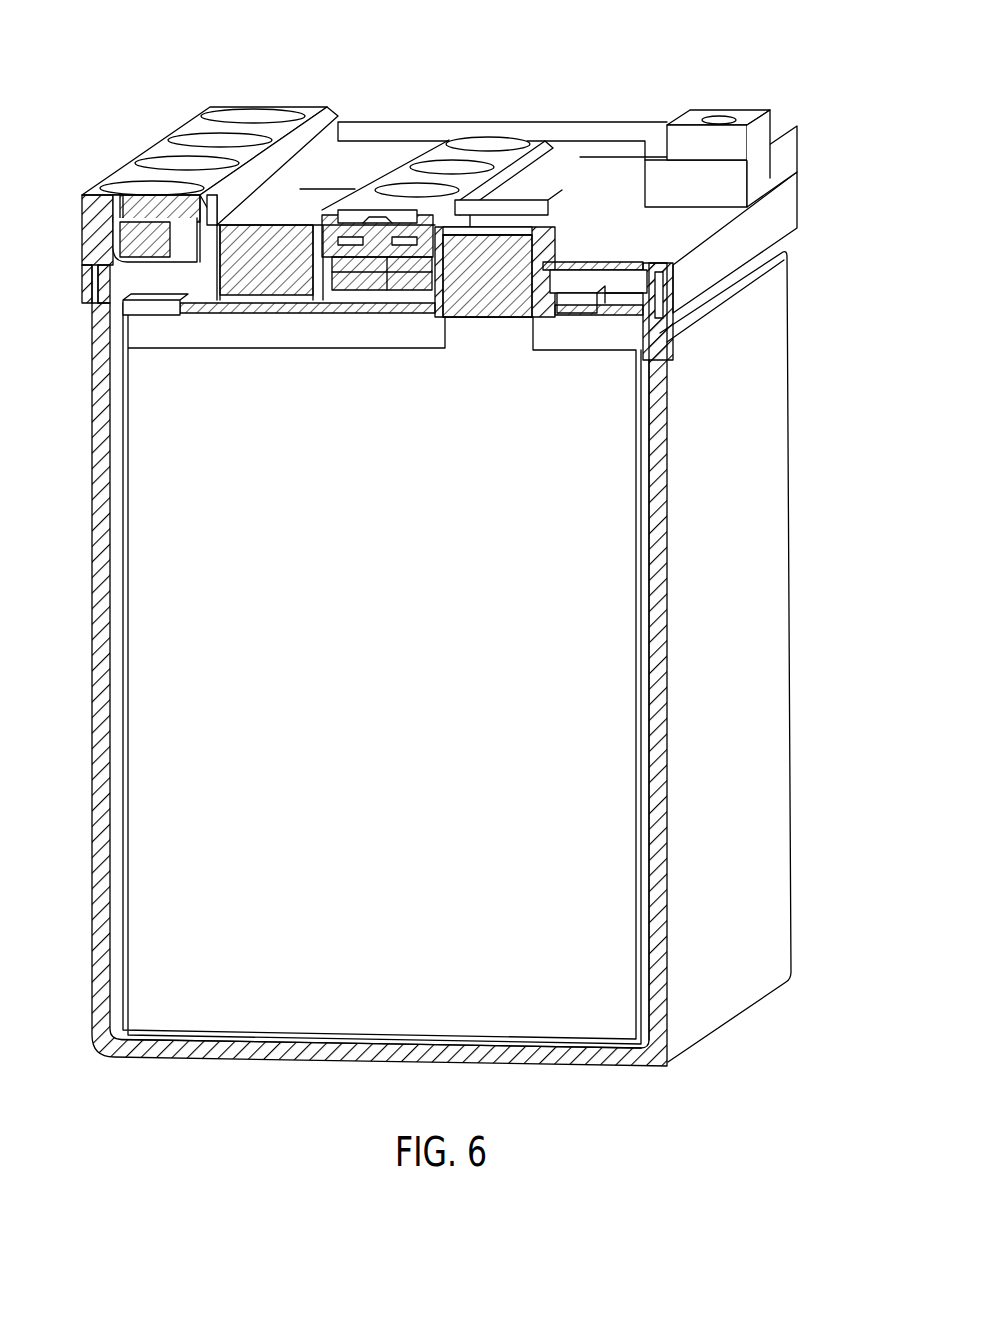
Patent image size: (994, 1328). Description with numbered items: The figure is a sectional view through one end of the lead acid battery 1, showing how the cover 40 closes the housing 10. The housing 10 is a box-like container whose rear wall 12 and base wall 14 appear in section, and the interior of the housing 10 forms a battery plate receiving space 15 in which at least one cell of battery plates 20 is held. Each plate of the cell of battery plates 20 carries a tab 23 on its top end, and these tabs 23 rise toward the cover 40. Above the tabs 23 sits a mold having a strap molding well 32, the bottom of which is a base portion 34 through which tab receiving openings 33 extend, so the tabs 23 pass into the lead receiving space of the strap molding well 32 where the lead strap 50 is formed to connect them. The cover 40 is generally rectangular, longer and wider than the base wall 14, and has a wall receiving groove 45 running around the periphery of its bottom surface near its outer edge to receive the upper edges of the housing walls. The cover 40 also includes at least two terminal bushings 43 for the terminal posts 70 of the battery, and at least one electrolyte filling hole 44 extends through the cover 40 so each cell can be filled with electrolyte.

The lead acid battery 1 is at (439, 578).
The housing 10 is at (446, 704).
The rear wall 12 is at (723, 697).
The base wall 14 is at (278, 1051).
The battery plate receiving space 15 is at (572, 1008).
The cell of battery plates 20 is at (630, 341).
The tab 23 is at (497, 323).
The strap molding well 32 is at (550, 293).
The tab receiving opening 33 is at (505, 318).
The base portion 34 is at (272, 315).
The cover 40 is at (705, 273).
The terminal bushing 43 is at (778, 173).
The electrolyte filling hole 44 is at (362, 296).
The wall receiving groove 45 is at (96, 302).
The lead strap 50 is at (282, 205).
The terminal post 70 is at (766, 134).